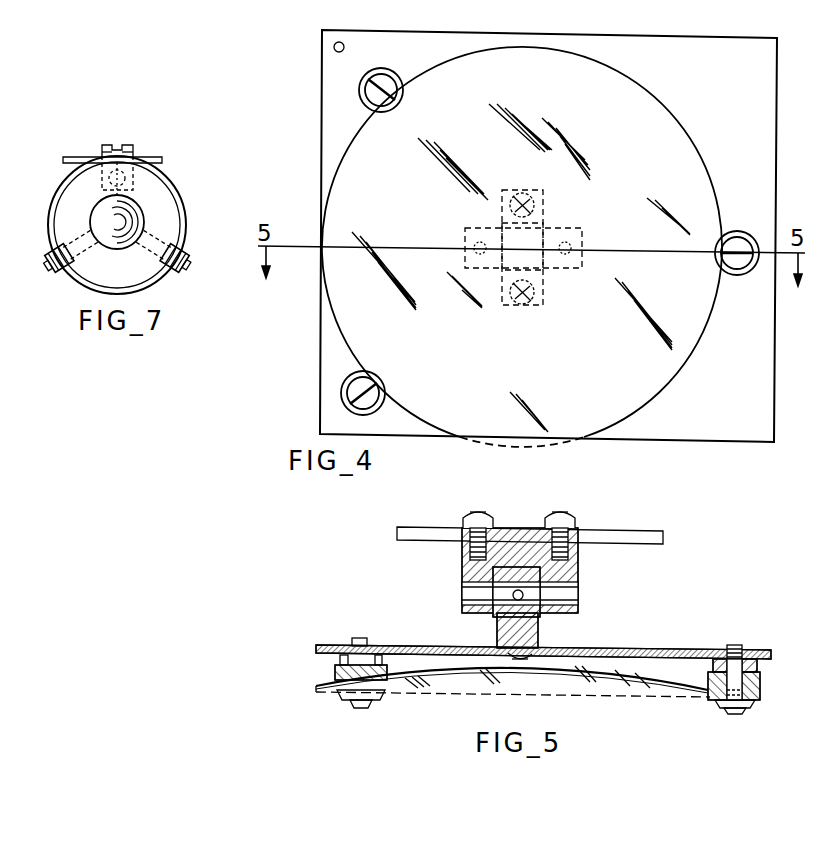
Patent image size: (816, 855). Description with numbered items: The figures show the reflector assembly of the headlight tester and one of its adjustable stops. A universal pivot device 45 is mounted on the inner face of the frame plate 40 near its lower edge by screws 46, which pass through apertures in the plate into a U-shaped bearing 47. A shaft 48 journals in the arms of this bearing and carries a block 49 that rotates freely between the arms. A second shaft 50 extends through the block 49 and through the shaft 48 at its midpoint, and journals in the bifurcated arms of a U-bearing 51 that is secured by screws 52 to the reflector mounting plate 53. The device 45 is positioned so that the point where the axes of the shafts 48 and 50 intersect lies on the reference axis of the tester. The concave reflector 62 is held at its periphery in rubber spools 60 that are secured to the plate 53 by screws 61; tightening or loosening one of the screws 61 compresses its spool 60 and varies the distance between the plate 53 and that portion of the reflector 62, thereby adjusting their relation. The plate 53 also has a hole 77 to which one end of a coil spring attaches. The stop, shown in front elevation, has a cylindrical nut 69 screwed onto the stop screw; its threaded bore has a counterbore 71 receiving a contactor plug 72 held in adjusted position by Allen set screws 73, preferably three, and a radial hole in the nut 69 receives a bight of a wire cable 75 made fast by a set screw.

In FIG. 5, the frame plate 40 is at (622, 536).
In FIG. 5, the universal pivot device 45 is at (582, 568).
In FIG. 5, the screws 46 is at (560, 516).
In FIG. 5, the U-shaped bearing 47 is at (462, 569).
In FIG. 5, the shaft 48 is at (566, 594).
In FIG. 5, the block 49 is at (545, 618).
In FIG. 5, the shaft 50 is at (513, 595).
In FIG. 5, the U-bearing 51 is at (497, 633).
In FIG. 4, the screws 52 is at (536, 203).
In FIG. 5, the screws 52 is at (553, 653).
In FIG. 4, the reflector mounting plate 53 is at (596, 33).
In FIG. 5, the reflector mounting plate 53 is at (690, 649).
In FIG. 5, the rubber spools 60 is at (762, 684).
In FIG. 5, the screws 61 is at (740, 645).
In FIG. 4, the concave reflector 62 is at (662, 388).
In FIG. 5, the concave reflector 62 is at (445, 683).
In FIG. 7, the cylindrical nut 69 is at (162, 223).
In FIG. 7, the counterbore 71 is at (11, 236).
In FIG. 7, the contactor plug 72 is at (108, 214).
In FIG. 7, the Allen set screws 73 is at (127, 148).
In FIG. 7, the wire cable 75 is at (180, 190).
In FIG. 4, the hole 77 is at (334, 47).